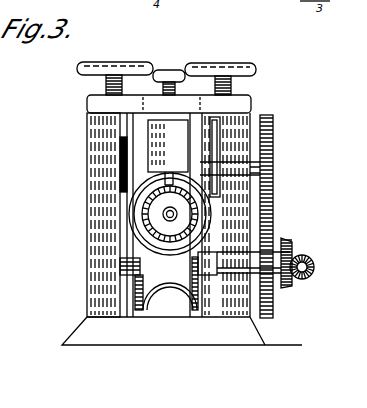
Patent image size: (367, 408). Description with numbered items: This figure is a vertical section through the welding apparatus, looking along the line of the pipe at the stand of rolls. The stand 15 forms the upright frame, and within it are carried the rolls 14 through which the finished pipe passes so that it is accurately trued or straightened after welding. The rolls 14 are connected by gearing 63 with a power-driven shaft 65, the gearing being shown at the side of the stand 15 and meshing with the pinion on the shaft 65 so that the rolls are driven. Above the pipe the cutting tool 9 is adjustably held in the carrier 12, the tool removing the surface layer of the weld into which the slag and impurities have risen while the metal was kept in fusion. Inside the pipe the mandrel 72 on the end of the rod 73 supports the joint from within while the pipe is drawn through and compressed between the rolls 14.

The cutting tool 9 is at (152, 181).
The carrier 12 is at (166, 155).
The rolls 14 is at (157, 277).
The stand 15 is at (96, 242).
The gearing 63 is at (273, 221).
The power-driven shaft 65 is at (302, 277).
The mandrel 72 is at (189, 210).
The rod 73 is at (163, 216).